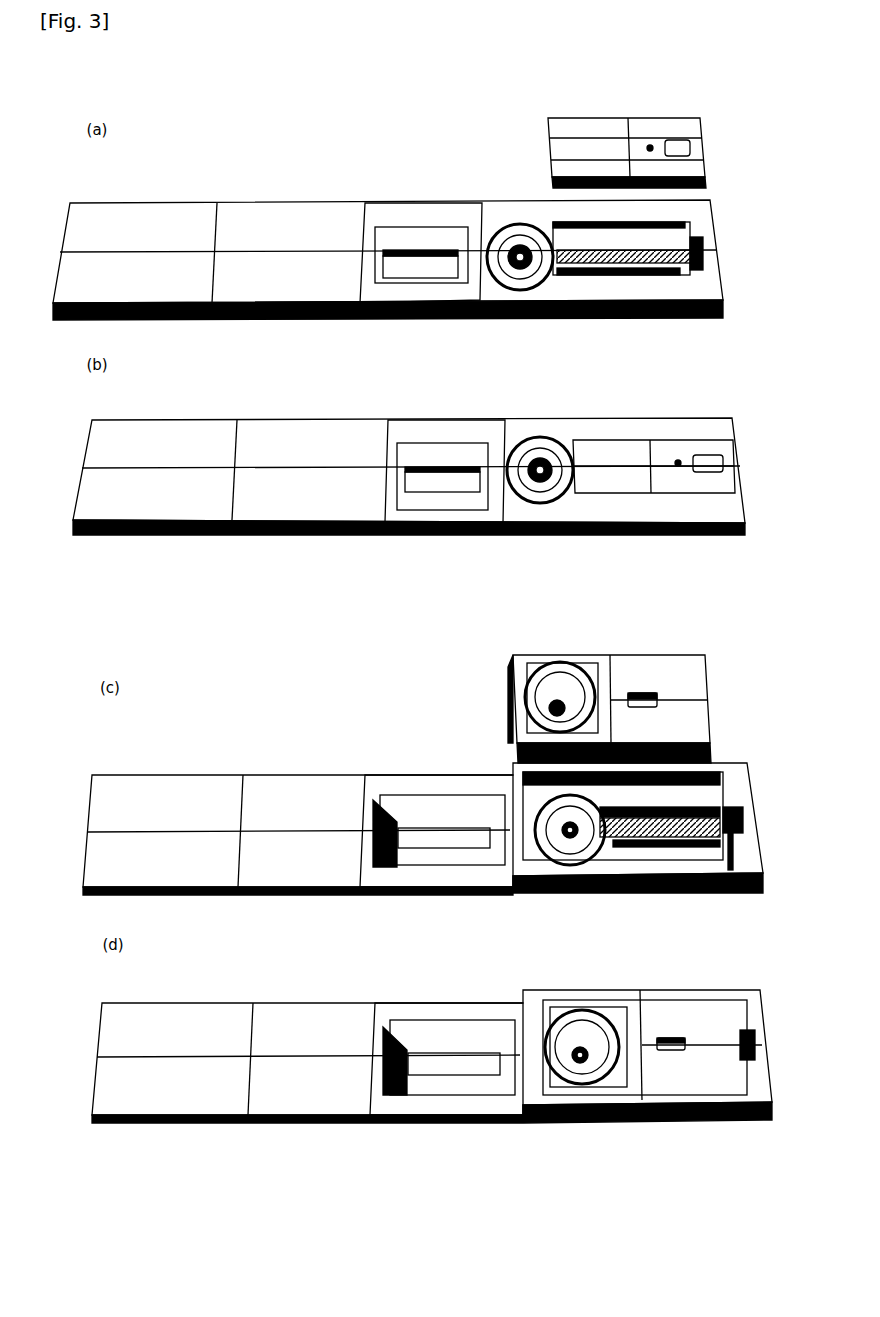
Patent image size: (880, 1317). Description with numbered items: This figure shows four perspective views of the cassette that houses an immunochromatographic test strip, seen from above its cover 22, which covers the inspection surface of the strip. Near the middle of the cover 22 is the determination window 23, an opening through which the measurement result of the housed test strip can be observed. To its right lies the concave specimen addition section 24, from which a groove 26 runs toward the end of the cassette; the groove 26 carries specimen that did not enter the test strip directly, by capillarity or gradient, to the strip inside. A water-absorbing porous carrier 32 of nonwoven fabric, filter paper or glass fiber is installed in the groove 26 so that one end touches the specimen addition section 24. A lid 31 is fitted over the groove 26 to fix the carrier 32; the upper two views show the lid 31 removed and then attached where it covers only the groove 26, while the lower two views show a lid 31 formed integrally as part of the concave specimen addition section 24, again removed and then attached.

The cover 22 is at (140, 227).
The determination window 23 is at (400, 263).
The specimen addition section 24 is at (513, 233).
The groove 26 is at (660, 233).
The lid 31 is at (565, 130).
The water-absorbing porous carrier 32 is at (693, 235).